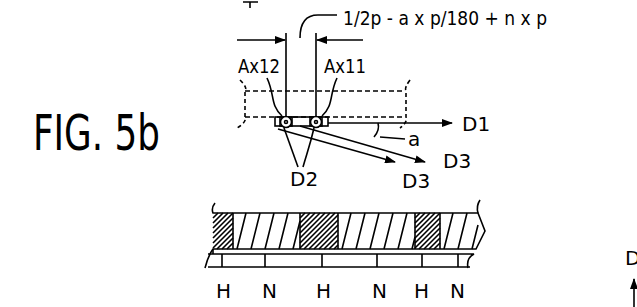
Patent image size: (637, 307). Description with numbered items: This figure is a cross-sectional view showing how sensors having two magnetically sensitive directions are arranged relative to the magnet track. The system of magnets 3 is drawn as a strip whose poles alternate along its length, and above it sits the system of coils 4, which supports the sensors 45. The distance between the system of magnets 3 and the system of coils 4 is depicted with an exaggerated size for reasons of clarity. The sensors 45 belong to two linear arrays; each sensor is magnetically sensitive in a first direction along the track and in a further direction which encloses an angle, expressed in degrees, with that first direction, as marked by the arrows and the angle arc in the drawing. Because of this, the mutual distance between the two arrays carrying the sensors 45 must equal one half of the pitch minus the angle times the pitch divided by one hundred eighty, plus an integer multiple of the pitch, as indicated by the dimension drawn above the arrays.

The system of magnets 3 is at (487, 233).
The system of coils 4 is at (407, 97).
The sensors 45 is at (279, 126).